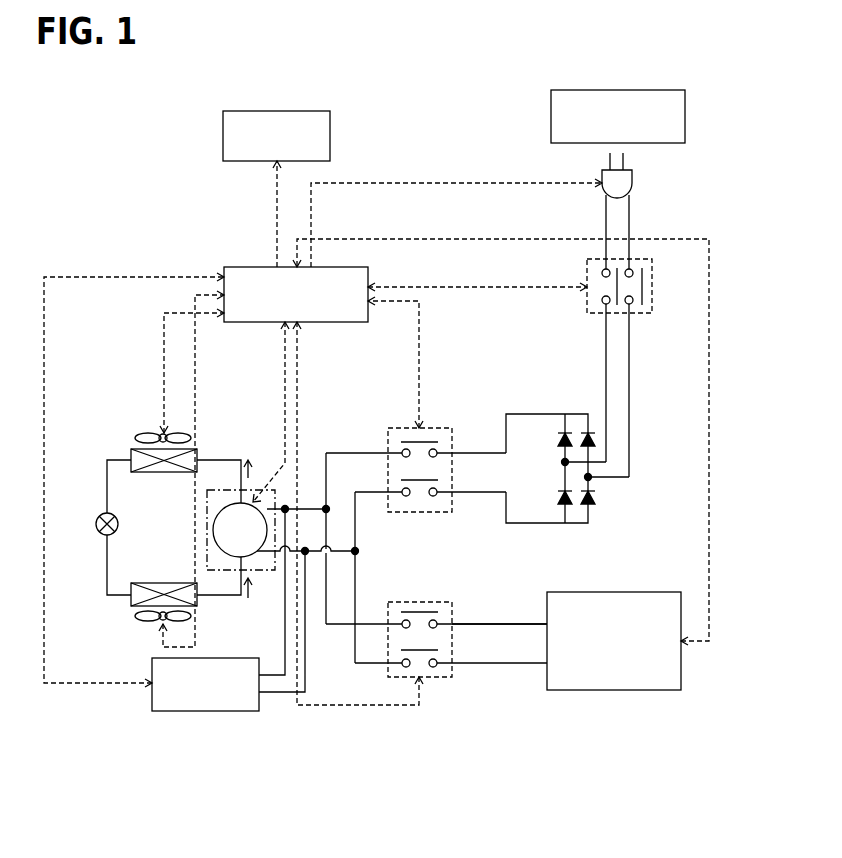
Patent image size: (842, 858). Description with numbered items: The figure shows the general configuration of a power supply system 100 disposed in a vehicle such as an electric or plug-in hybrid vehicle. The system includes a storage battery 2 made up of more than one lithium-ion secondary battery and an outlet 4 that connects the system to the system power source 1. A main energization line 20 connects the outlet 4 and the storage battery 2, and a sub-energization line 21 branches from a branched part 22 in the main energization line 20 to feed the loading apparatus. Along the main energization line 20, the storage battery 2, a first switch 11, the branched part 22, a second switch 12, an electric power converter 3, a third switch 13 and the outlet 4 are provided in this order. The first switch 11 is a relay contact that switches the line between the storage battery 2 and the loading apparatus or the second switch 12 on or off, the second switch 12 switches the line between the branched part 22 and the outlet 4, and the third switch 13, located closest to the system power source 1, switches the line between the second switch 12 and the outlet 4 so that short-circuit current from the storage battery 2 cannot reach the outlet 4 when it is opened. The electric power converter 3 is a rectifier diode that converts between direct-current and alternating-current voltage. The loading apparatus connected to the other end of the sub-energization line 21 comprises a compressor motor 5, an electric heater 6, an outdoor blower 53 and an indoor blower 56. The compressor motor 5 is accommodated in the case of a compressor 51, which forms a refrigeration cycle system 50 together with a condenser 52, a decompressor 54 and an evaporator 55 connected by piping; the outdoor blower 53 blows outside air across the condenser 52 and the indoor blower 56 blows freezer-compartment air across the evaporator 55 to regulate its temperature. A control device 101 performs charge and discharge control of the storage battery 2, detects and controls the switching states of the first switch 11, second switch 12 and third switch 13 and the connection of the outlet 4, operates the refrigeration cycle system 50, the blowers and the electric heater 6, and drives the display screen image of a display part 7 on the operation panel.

The system power source 1 is at (686, 112).
The storage battery 2 is at (608, 690).
The electric power converter 3 is at (599, 501).
The outlet 4 is at (633, 183).
The compressor motor 5 is at (250, 558).
The electric heater 6 is at (205, 712).
The display part 7 is at (331, 136).
The first switch 11 is at (440, 680).
The second switch 12 is at (440, 515).
The third switch 13 is at (657, 283).
The main energization line 20 is at (498, 619).
The sub-energization line 21 is at (326, 504).
The branched part 22 is at (363, 551).
The refrigeration cycle system 50 is at (229, 452).
The compressor 51 is at (250, 580).
The condenser 52 is at (128, 452).
The outdoor blower 53 is at (150, 433).
The decompressor 54 is at (97, 538).
The evaporator 55 is at (199, 604).
The indoor blower 56 is at (182, 628).
The power supply system 100 is at (503, 745).
The control device 101 is at (240, 267).